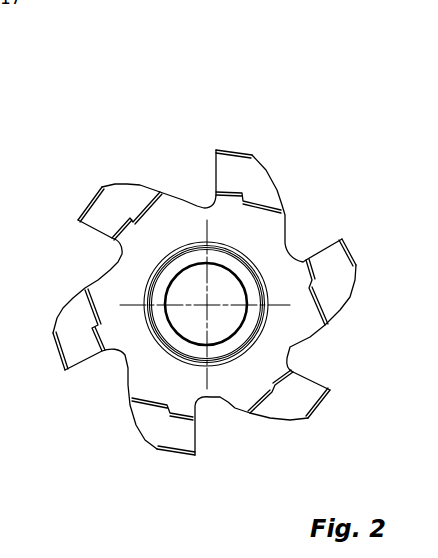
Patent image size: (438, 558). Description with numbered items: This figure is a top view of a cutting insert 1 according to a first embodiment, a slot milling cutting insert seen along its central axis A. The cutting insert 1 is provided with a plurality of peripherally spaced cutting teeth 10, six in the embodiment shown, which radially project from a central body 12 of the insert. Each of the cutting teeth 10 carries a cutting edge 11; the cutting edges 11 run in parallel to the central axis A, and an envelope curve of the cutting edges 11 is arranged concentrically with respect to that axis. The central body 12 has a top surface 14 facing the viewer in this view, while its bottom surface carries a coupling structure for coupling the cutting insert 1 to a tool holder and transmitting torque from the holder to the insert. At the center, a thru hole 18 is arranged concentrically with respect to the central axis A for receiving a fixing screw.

The cutting insert 1 is at (272, 64).
The cutting teeth 10 is at (247, 171).
The cutting edges 11 is at (217, 150).
The central body 12 is at (228, 365).
The top surface 14 is at (140, 247).
The thru hole 18 is at (221, 313).